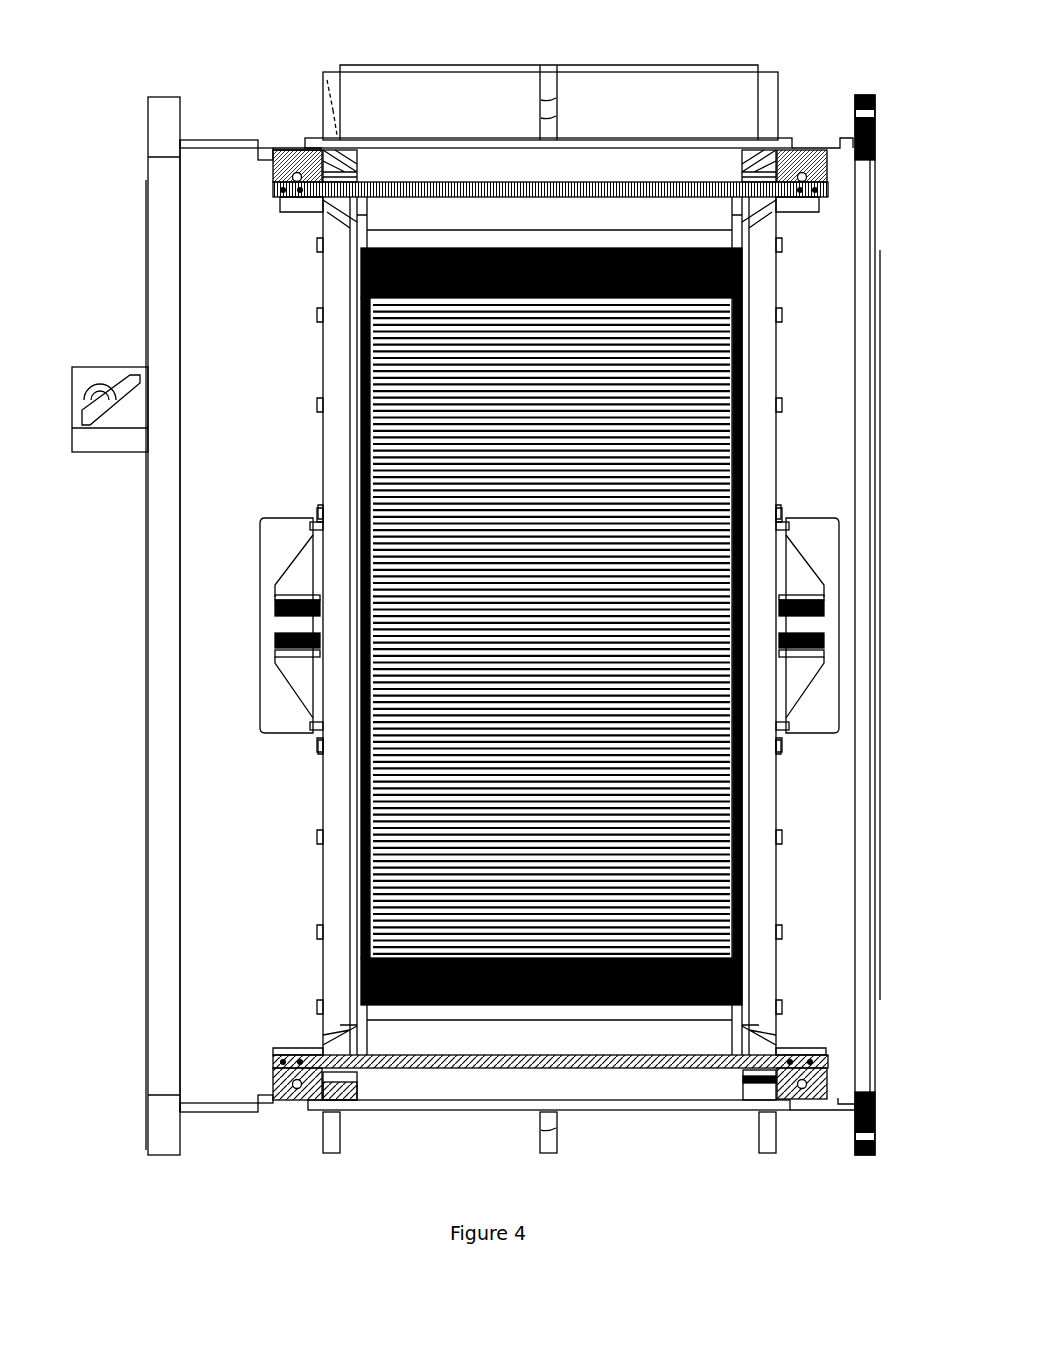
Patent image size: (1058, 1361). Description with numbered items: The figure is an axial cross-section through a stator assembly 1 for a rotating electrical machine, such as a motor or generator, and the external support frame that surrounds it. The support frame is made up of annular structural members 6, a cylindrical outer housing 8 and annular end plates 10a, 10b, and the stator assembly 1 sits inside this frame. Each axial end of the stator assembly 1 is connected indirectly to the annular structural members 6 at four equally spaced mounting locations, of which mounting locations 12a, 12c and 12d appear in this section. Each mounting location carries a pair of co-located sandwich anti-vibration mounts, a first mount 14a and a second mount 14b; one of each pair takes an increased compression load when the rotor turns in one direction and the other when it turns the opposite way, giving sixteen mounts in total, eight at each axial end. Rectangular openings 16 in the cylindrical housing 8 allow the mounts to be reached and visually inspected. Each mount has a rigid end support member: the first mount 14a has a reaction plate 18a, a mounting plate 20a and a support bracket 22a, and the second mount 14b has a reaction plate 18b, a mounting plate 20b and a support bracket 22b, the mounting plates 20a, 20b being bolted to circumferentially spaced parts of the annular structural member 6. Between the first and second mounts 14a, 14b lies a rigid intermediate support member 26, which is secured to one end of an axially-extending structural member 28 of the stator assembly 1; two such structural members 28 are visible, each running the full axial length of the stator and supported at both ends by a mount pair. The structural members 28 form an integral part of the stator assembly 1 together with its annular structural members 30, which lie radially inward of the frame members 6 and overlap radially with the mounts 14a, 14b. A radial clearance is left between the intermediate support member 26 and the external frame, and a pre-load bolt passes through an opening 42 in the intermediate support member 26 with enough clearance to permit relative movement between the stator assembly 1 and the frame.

The stator assembly 1 is at (300, 378).
The annular structural member 6 is at (343, 160).
The cylindrical outer housing 8 is at (215, 143).
The annular end plate 10a is at (165, 120).
The annular end plate 10b is at (870, 97).
The mounting location 12a is at (275, 222).
The mounting location 12c is at (268, 1022).
The mounting location 12d is at (267, 512).
The first sandwich anti-vibration mount 14a is at (282, 641).
The second sandwich anti-vibration mount 14b is at (282, 610).
The rectangular opening 16 is at (290, 148).
The reaction plate 18a is at (282, 655).
The reaction plate 18b is at (282, 598).
The mounting plate 20a is at (312, 722).
The mounting plate 20b is at (315, 525).
The support bracket 22a is at (300, 675).
The support bracket 22b is at (300, 575).
The rigid intermediate support member 26 is at (303, 153).
The axially-extending structural member 28 is at (275, 192).
The annular structural member 30 is at (337, 203).
The opening 42 is at (275, 182).